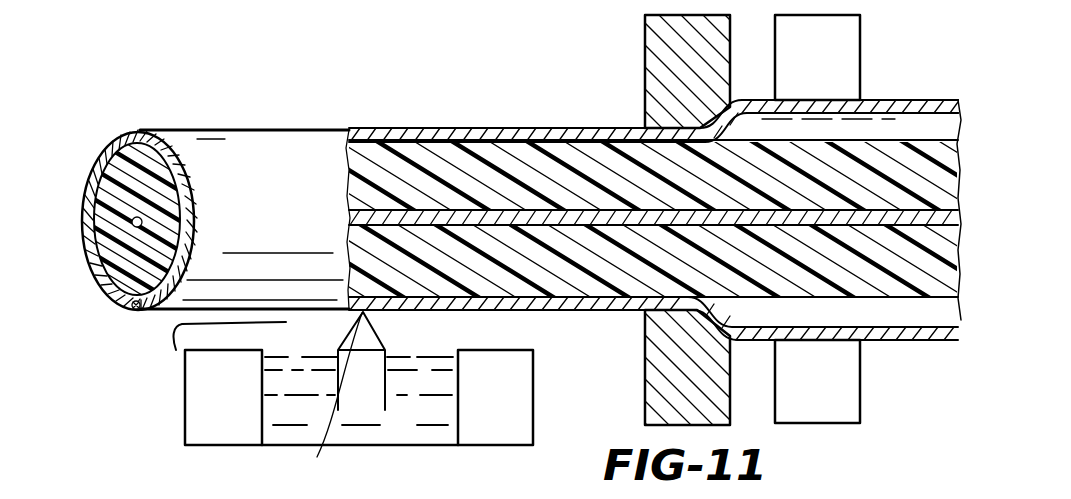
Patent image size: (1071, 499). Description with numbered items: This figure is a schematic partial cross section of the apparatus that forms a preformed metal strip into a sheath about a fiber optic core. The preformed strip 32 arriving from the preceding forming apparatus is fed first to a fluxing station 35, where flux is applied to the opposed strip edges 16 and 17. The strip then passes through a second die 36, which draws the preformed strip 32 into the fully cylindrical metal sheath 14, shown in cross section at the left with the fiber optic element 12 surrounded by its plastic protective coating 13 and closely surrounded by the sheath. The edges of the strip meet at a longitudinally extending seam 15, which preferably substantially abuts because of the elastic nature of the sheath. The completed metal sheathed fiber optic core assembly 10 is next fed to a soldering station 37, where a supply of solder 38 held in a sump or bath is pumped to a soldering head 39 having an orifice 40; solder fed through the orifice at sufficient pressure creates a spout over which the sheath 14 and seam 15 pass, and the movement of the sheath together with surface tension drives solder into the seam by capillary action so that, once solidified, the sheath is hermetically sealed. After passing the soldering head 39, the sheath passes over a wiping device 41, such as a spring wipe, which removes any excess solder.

The metal sheathed fiber optic core assembly 10 is at (237, 131).
The fiber optic element 12 is at (136, 217).
The plastic protective layer or coating 13 is at (110, 170).
The metal sheath 14 is at (153, 131).
The longitudinally extending seam 15 is at (135, 320).
The strip edge 16 is at (131, 301).
The strip edge 17 is at (143, 311).
The preformed strip 32 is at (908, 100).
The fluxing station 35 is at (853, 60).
The second die 36 is at (650, 48).
The soldering station 37 is at (517, 392).
The supply of solder 38 is at (410, 357).
The soldering head 39 is at (337, 405).
The orifice 40 is at (361, 314).
The wiping device 41 is at (288, 318).